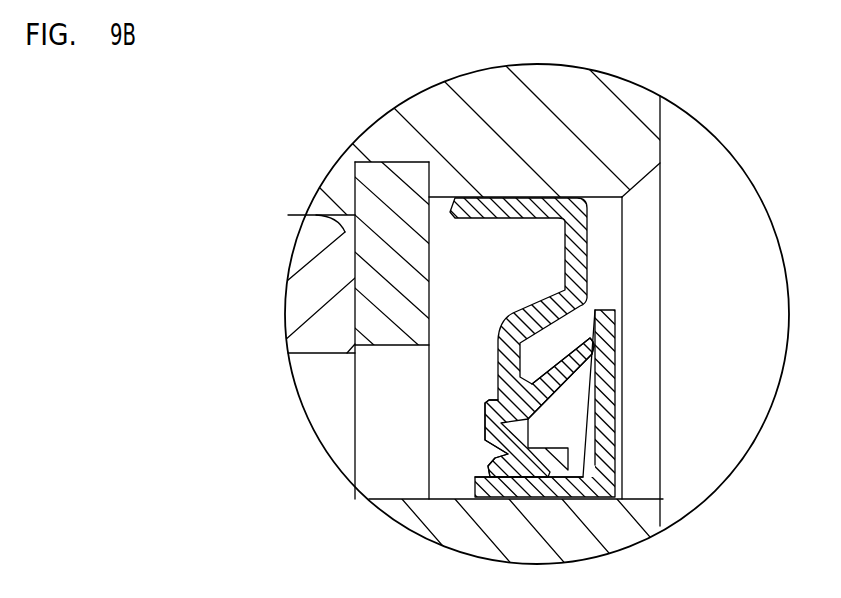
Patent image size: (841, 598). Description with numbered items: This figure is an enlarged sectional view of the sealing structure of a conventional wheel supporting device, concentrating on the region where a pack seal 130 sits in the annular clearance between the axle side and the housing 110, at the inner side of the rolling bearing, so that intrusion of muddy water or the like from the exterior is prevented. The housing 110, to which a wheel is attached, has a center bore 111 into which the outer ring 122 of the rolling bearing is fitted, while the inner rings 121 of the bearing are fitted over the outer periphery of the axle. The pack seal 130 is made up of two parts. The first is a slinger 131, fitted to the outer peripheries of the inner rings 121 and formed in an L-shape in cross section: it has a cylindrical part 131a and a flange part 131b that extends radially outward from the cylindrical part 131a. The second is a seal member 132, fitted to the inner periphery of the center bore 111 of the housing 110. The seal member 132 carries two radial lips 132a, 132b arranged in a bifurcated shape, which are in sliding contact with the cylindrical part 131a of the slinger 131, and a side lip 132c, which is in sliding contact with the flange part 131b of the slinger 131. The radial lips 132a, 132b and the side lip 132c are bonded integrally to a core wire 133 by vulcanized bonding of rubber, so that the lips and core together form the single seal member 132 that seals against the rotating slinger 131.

The housing 110 is at (643, 118).
The center bore 111 is at (587, 197).
The inner rings 121 is at (398, 513).
The outer ring 122 is at (295, 262).
The pack seal 130 is at (704, 238).
The slinger 131 is at (633, 430).
The cylindrical part 131a is at (630, 505).
The flange part 131b is at (608, 388).
The seal member 132 is at (503, 263).
The radial lip 132a is at (495, 449).
The radial lip 132b is at (568, 458).
The side lip 132c is at (595, 343).
The core wire 133 is at (490, 197).